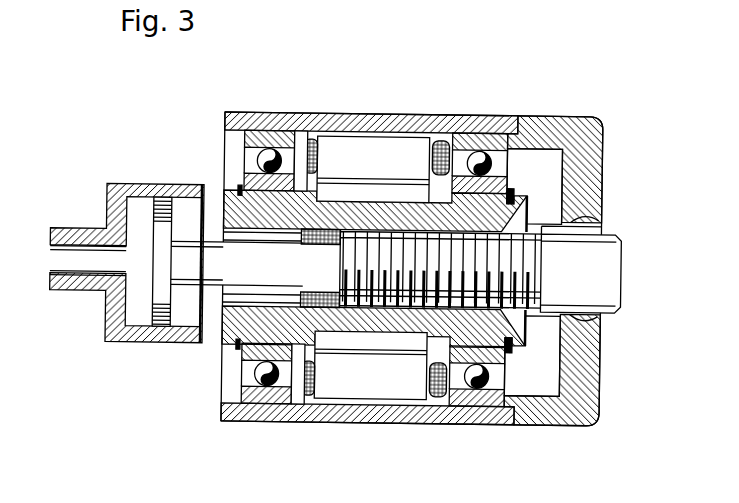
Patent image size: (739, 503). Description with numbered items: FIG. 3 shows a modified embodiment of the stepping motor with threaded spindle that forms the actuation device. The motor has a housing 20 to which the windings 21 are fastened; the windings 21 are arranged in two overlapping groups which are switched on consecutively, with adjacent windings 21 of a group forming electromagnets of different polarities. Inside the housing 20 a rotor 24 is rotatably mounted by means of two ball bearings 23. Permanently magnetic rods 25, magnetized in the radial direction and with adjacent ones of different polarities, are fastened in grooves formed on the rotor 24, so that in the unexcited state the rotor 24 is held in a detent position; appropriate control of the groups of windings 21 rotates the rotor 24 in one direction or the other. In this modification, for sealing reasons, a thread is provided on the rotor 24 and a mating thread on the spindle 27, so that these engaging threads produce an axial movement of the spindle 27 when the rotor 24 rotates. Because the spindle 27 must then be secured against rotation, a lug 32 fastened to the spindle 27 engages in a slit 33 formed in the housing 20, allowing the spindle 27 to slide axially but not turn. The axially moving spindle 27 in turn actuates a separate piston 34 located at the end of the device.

The housing 20 is at (536, 128).
The windings 21 is at (435, 148).
The ball bearings 23 is at (270, 150).
The rotor 24 is at (300, 318).
The permanently magnetic rods 25 is at (372, 340).
The spindle 27 is at (424, 308).
The lug 32 is at (590, 231).
The slit 33 is at (600, 214).
The piston 34 is at (166, 318).